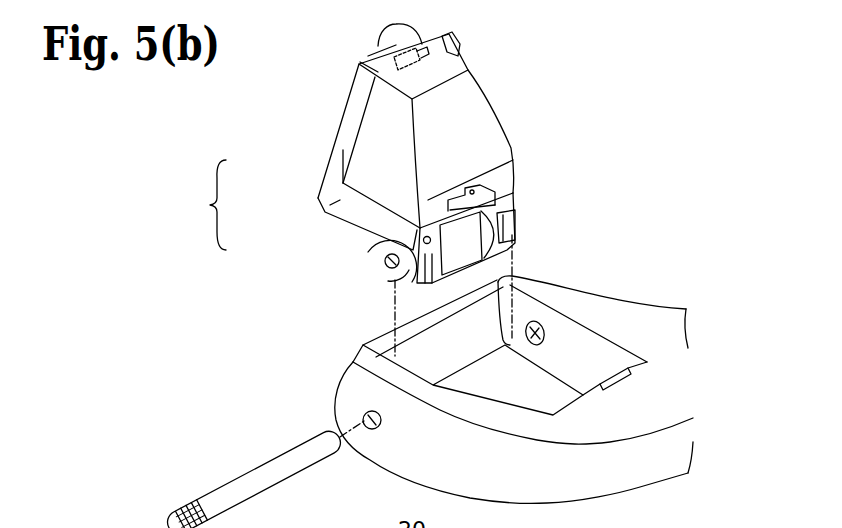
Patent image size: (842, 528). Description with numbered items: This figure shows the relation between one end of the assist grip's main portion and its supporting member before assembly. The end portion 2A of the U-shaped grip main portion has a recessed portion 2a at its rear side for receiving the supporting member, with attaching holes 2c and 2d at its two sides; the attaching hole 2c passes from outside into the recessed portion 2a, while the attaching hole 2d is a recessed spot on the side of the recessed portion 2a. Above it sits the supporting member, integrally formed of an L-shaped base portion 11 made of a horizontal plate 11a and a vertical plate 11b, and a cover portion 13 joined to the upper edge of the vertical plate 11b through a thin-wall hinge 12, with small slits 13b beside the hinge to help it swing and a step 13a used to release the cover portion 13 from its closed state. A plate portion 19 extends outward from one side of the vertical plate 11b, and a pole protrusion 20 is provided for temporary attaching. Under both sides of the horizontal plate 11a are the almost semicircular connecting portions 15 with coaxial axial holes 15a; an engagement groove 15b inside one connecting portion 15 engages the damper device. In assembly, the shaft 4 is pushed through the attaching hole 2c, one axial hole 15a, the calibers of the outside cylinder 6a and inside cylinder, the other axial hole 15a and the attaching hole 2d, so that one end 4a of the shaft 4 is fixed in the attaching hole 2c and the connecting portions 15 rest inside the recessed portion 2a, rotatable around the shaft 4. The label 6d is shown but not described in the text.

The cover portion 13 is at (504, 130).
The step 13a is at (520, 173).
The small slits 13b is at (419, 49).
The thin-wall hinge 12 is at (386, 51).
The pole protrusion 20 is at (379, 29).
The plate portion 19 is at (460, 50).
The part 6d is at (527, 19).
The outside cylinder 6a is at (684, 0).
The base portion 11 is at (207, 205).
The horizontal plate 11a is at (327, 213).
The vertical plate 11b is at (328, 153).
The connecting portions 15 is at (370, 247).
The axial holes 15a is at (385, 278).
The engagement groove 15b is at (520, 236).
The end portion 2A is at (734, 269).
The attaching hole 2d is at (546, 322).
The recessed portion 2a is at (522, 393).
The attaching hole 2c is at (363, 418).
The shaft 4 is at (250, 478).
The one end of the shaft 4a is at (188, 505).